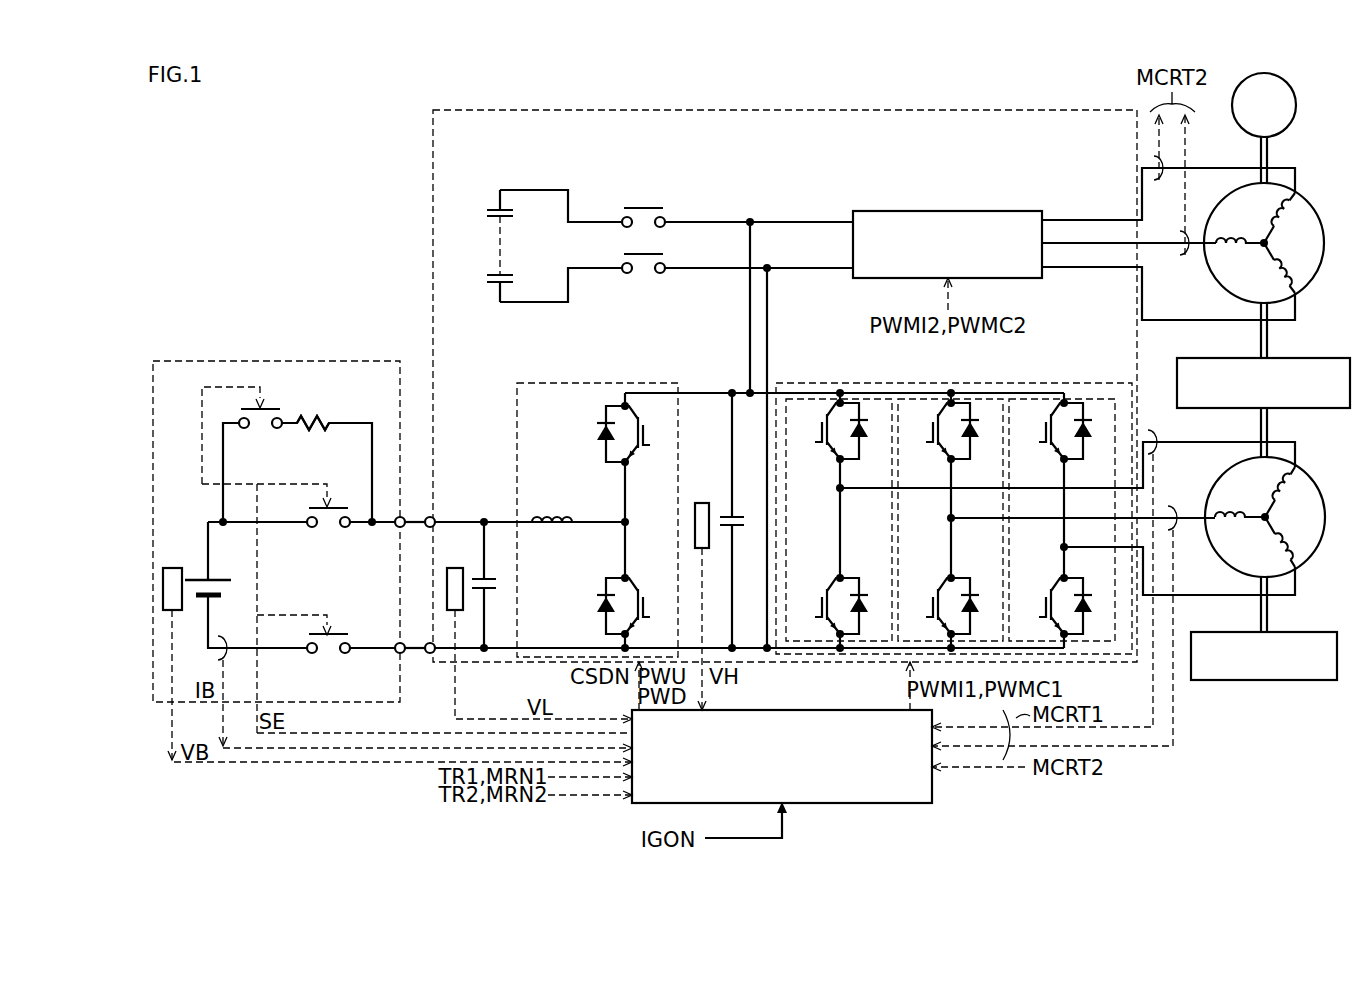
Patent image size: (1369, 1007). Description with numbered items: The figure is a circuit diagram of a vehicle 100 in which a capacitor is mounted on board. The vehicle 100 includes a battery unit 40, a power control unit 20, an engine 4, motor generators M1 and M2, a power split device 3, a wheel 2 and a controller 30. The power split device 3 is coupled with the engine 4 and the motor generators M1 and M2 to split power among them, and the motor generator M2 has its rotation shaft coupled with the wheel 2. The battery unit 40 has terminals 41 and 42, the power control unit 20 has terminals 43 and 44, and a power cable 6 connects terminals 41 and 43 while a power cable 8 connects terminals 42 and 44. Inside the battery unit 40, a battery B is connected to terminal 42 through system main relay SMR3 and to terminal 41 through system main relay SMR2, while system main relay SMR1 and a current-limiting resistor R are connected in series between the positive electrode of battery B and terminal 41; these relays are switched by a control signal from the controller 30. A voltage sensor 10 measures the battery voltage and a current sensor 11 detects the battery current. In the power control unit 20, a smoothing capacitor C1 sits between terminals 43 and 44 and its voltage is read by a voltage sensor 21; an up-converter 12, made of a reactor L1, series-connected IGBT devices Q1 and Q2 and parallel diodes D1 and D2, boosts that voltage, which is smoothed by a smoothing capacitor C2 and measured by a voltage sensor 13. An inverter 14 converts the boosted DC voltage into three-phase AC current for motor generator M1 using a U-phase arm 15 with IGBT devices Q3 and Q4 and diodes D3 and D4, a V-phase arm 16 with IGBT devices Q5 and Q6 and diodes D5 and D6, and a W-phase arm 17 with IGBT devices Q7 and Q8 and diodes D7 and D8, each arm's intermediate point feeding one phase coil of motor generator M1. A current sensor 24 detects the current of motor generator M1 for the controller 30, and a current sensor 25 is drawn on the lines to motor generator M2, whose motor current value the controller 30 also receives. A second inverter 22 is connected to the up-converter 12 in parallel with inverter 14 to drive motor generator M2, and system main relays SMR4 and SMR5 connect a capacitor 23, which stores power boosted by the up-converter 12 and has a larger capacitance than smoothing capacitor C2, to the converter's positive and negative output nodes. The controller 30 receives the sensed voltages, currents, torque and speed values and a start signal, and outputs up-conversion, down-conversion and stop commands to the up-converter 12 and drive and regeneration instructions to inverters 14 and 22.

The wheel 2 is at (1297, 105).
The power split device 3 is at (1312, 358).
The engine 4 is at (1314, 632).
The power cable 6 is at (418, 527).
The power cable 8 is at (418, 655).
The voltage sensor 10 is at (172, 568).
The current sensor 11 is at (224, 637).
The up-converter 12 is at (574, 520).
The voltage sensor 13 is at (702, 503).
The inverter 14 is at (1035, 496).
The U-phase arm 15 is at (1040, 495).
The V-phase arm 16 is at (1056, 495).
The W-phase arm 17 is at (1152, 495).
The power control unit 20 is at (470, 110).
The voltage sensor 21 is at (455, 568).
The inverter 22 is at (1012, 211).
The capacitor 23 is at (493, 232).
The current sensor 24 is at (1150, 430).
The current sensor 25 is at (1158, 186).
The controller 30 is at (875, 803).
The battery unit 40 is at (300, 361).
The terminal 41 is at (398, 516).
The terminal 42 is at (398, 642).
The terminal 43 is at (433, 516).
The terminal 44 is at (432, 642).
The vehicle 100 is at (183, 312).
The battery B is at (193, 574).
The current-limiting resistor R is at (311, 420).
The system main relay SMR1 is at (263, 431).
The system main relay SMR2 is at (333, 533).
The system main relay SMR3 is at (333, 660).
The system main relay SMR4 is at (640, 200).
The system main relay SMR5 is at (642, 272).
The smoothing capacitor C1 is at (493, 592).
The smoothing capacitor C2 is at (737, 528).
The reactor L1 is at (552, 507).
The IGBT device Q1 is at (649, 434).
The IGBT device Q2 is at (649, 606).
The IGBT device Q3 is at (815, 431).
The IGBT device Q4 is at (815, 606).
The IGBT device Q5 is at (926, 431).
The IGBT device Q6 is at (926, 606).
The IGBT device Q7 is at (1039, 431).
The IGBT device Q8 is at (1039, 606).
The diode D1 is at (593, 434).
The diode D2 is at (593, 606).
The diode D3 is at (861, 441).
The diode D4 is at (861, 615).
The diode D5 is at (972, 441).
The diode D6 is at (972, 615).
The diode D7 is at (1085, 441).
The diode D8 is at (1085, 615).
The motor generator M1 is at (1308, 468).
The motor generator M2 is at (1308, 196).